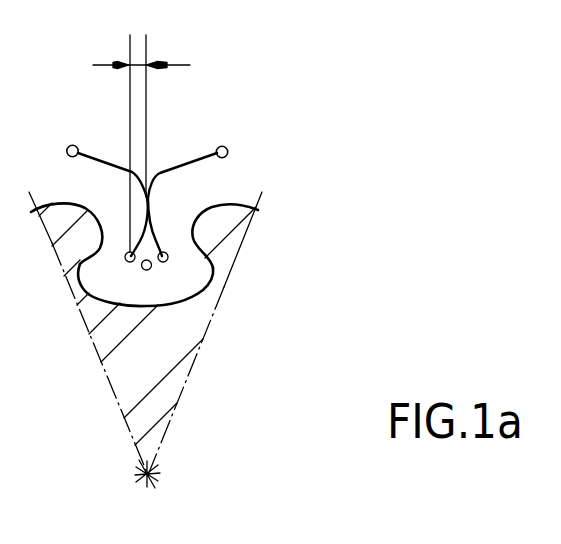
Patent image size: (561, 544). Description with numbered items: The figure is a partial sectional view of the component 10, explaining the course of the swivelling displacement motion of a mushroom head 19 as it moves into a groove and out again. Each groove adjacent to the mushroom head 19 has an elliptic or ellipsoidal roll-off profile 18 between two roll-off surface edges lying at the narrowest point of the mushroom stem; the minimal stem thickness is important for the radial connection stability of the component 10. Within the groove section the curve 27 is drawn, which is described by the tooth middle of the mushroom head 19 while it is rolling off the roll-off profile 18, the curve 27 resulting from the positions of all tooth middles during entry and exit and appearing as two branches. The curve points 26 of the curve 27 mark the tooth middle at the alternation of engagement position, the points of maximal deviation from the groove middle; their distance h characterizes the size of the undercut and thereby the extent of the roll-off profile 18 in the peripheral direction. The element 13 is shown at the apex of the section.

The distance h is at (134, 67).
The component 10 is at (177, 403).
The apex / tip of V-groove body 13 is at (150, 474).
The roll-off profile 18 is at (211, 271).
The mushroom head 19 is at (213, 224).
The curve points 26 is at (127, 262).
The curve 27 is at (173, 166).